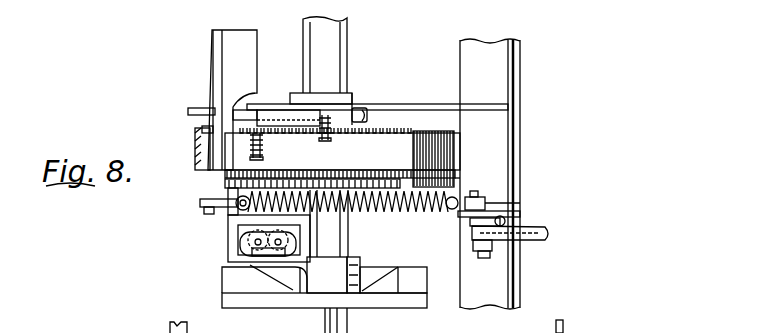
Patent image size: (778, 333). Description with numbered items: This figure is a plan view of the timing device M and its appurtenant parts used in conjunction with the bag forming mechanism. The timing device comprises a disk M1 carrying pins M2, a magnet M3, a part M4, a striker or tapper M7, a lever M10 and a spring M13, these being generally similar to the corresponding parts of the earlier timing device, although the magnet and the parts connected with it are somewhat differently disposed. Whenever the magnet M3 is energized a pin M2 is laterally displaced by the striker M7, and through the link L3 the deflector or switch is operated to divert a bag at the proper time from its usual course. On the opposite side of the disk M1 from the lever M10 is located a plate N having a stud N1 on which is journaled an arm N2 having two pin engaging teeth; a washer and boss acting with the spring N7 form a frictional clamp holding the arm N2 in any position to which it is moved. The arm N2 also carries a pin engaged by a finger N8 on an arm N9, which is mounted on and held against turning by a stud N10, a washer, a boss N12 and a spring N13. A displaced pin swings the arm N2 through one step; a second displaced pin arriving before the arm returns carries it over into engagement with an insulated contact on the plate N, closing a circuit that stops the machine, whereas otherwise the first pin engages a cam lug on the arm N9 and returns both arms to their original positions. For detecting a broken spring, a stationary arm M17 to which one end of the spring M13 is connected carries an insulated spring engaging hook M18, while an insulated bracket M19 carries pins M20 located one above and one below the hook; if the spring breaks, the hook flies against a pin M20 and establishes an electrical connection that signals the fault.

The boss N12 is at (232, 118).
The stud N10 is at (258, 143).
The arm N9 is at (268, 137).
The finger N8 is at (300, 100).
The plate N is at (333, 100).
The arm N2 is at (357, 106).
The spring N7 is at (377, 119).
The stud N1 is at (335, 140).
The spring N13 is at (262, 150).
The lever M10 is at (340, 164).
The link L3 is at (430, 167).
The disk M1 is at (490, 146).
The pin M2 is at (456, 178).
The pin M20 is at (500, 208).
The insulated hook M18 is at (487, 204).
The insulated bracket M19 is at (480, 216).
The stationary arm M17 is at (548, 238).
The spring M13 is at (388, 215).
The striker M7 is at (225, 190).
The part of timing device M4 is at (250, 250).
The magnet M3 is at (283, 253).